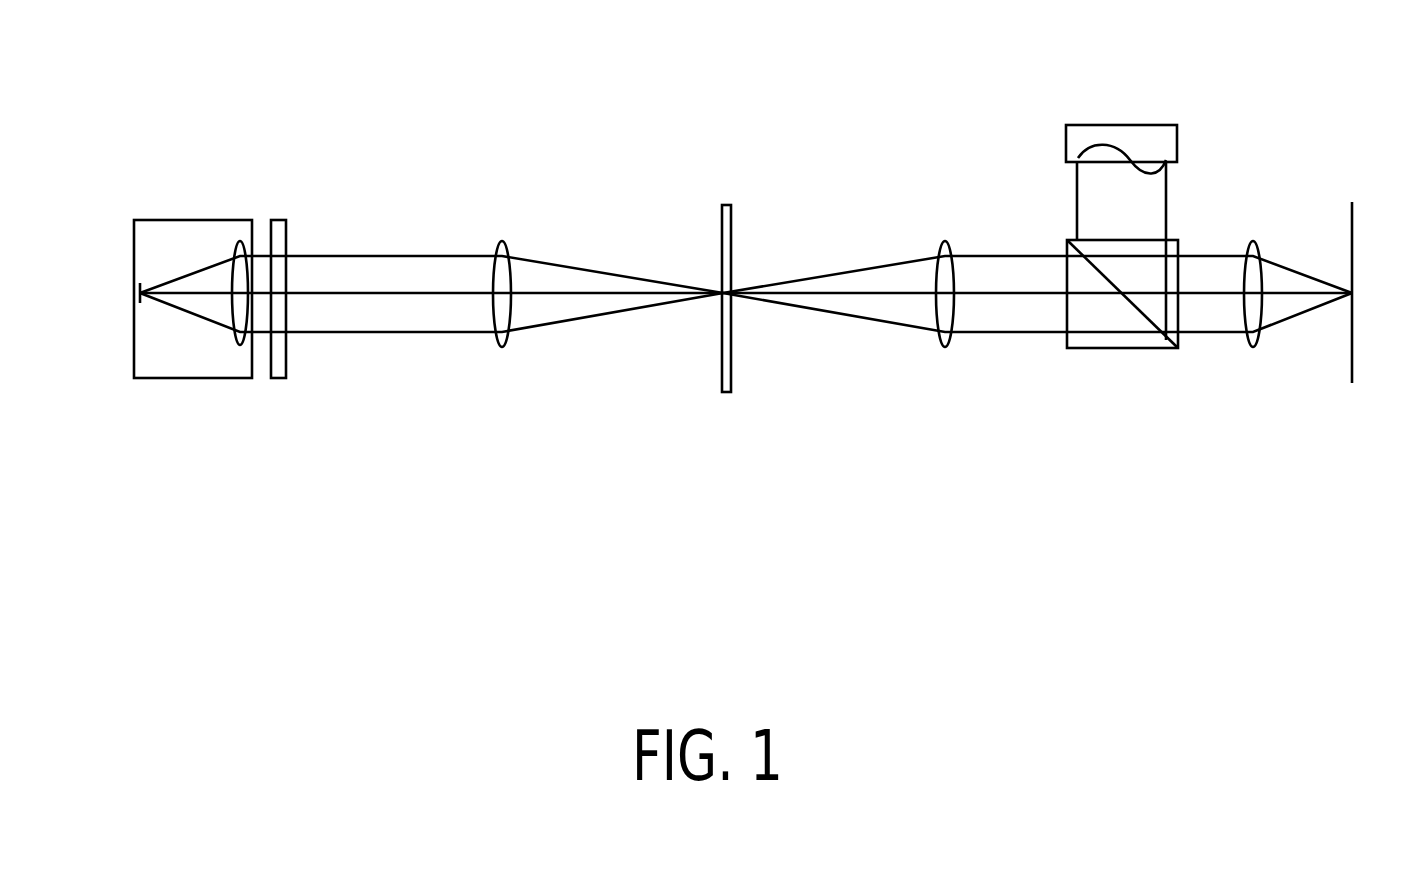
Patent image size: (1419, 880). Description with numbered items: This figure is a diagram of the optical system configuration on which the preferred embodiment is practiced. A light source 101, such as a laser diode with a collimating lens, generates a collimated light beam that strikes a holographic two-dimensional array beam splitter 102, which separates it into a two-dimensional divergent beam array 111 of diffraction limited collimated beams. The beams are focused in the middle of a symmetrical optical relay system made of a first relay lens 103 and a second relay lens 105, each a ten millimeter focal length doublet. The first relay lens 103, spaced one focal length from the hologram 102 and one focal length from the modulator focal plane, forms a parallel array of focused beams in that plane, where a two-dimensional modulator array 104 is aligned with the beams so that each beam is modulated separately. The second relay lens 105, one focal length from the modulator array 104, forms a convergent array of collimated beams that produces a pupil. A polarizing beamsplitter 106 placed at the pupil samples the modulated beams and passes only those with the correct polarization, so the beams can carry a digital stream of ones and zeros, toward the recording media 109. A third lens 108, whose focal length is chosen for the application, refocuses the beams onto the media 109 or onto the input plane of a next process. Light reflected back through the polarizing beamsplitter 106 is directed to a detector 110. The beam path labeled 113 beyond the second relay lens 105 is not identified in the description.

The light source 101 is at (193, 378).
The holographic two-dimensional array beam splitter 102 is at (282, 218).
The first relay lens 103 is at (502, 247).
The modulator array 104 is at (720, 388).
The second relay lens 105 is at (942, 240).
The polarizing beamsplitter 106 is at (1170, 243).
The third lens 108 is at (1250, 243).
The recording media 109 is at (1355, 280).
The detector 110 is at (1140, 127).
The beam array 111 is at (335, 255).
The collimated beam 113 is at (982, 250).